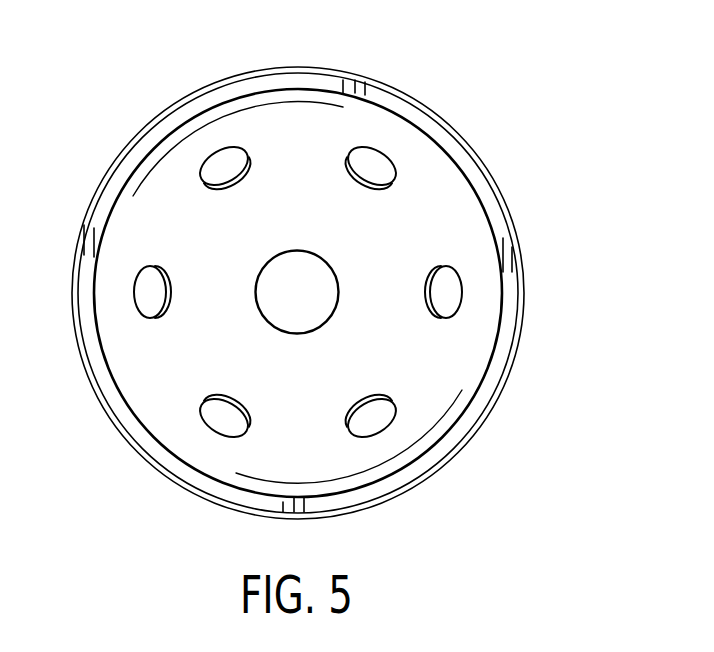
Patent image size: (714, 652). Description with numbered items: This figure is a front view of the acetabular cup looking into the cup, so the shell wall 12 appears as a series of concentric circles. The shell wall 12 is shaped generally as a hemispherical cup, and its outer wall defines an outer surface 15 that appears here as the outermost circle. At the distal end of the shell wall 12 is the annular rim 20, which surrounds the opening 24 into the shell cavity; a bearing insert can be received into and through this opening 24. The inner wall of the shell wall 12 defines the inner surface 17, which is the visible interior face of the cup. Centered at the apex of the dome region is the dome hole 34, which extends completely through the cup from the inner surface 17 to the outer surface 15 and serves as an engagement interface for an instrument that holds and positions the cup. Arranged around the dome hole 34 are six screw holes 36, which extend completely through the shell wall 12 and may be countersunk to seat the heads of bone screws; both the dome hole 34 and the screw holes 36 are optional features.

The shell wall 12 is at (171, 102).
The outer surface 15 is at (458, 130).
The inner surface 17 is at (312, 389).
The annular rim 20 is at (397, 97).
The opening 24 is at (378, 106).
The dome hole 34 is at (334, 277).
The screw holes 36 is at (240, 181).